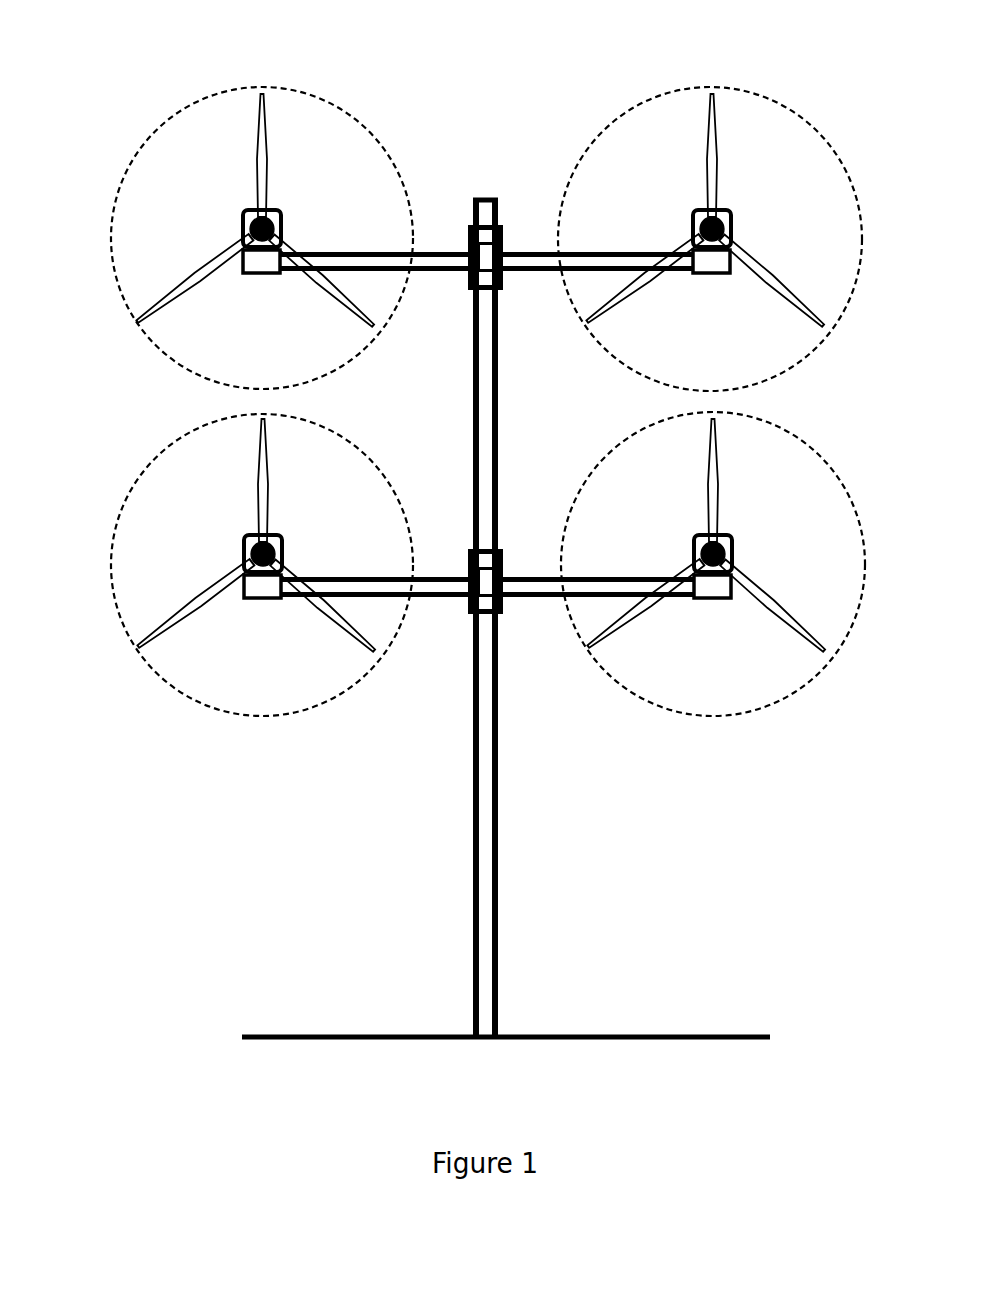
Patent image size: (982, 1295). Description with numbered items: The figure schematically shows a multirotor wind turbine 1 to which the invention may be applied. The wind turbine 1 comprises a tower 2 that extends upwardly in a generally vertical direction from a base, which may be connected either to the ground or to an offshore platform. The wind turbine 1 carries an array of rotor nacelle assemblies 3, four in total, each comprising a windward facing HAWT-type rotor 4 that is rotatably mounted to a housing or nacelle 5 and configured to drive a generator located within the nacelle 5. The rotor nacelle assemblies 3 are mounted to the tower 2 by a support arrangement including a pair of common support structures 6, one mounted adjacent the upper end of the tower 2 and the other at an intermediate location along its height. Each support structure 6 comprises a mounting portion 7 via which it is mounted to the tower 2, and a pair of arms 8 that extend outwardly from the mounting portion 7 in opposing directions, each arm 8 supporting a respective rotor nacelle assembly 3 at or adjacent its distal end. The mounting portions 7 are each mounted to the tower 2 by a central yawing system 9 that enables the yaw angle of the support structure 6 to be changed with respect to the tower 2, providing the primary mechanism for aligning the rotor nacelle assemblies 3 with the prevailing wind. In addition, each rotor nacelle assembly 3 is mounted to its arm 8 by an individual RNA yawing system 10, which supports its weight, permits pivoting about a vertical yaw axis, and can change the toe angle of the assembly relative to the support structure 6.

The multirotor wind turbine 1 is at (288, 900).
The tower 2 is at (485, 935).
The rotor nacelle assembly 3 is at (170, 197).
The rotor 4 is at (212, 258).
The nacelle 5 is at (247, 557).
The support structure 6 is at (530, 197).
The mounting portion 7 is at (469, 228).
The arm 8 is at (386, 252).
The central yawing system 9 is at (494, 275).
The RNA yawing system 10 is at (258, 600).